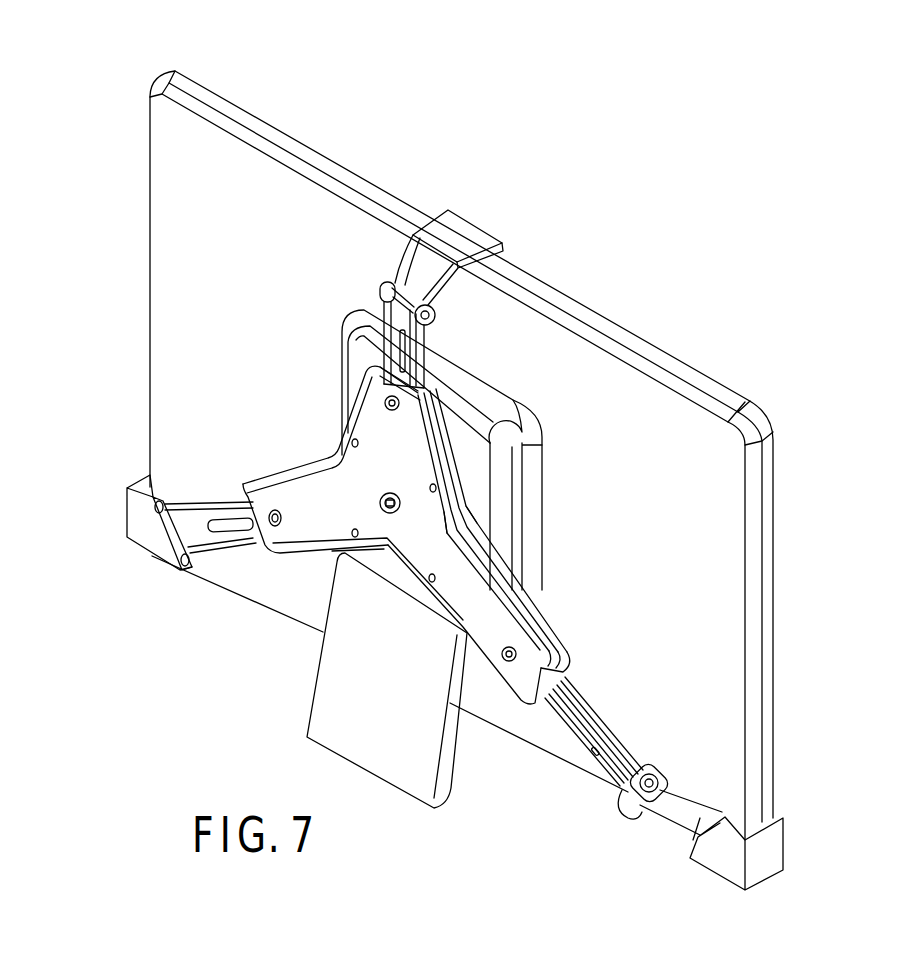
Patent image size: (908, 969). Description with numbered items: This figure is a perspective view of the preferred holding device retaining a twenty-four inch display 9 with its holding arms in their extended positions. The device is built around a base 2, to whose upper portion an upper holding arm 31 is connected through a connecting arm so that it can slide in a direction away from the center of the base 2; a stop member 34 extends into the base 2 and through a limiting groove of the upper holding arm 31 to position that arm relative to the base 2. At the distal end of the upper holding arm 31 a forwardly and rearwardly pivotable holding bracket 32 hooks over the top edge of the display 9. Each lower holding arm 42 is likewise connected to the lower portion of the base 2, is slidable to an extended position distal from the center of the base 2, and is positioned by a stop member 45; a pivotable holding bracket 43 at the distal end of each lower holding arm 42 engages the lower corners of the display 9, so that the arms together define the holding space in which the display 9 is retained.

The base 2 is at (290, 434).
The display 9 is at (688, 362).
The upper holding arm 31 is at (428, 345).
The holding bracket 32 is at (467, 238).
The stop member 34 is at (388, 398).
The lower holding arm 42 is at (214, 550).
The holding bracket 43 is at (145, 542).
The stop member 45 is at (283, 550).